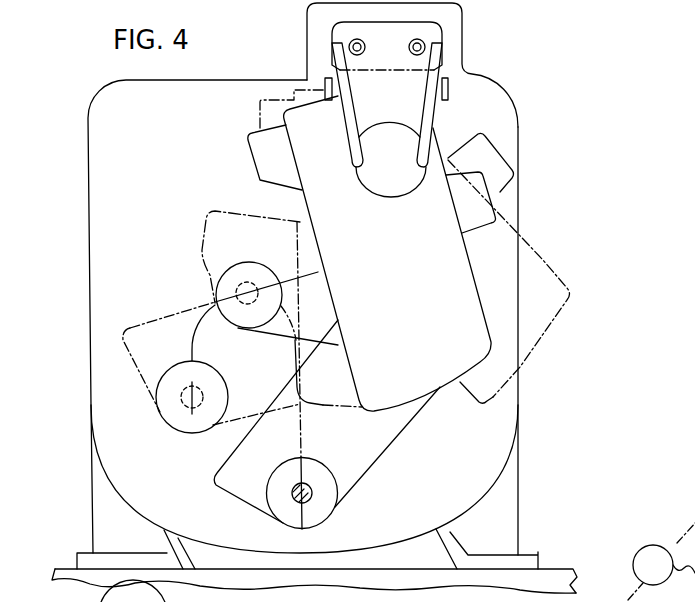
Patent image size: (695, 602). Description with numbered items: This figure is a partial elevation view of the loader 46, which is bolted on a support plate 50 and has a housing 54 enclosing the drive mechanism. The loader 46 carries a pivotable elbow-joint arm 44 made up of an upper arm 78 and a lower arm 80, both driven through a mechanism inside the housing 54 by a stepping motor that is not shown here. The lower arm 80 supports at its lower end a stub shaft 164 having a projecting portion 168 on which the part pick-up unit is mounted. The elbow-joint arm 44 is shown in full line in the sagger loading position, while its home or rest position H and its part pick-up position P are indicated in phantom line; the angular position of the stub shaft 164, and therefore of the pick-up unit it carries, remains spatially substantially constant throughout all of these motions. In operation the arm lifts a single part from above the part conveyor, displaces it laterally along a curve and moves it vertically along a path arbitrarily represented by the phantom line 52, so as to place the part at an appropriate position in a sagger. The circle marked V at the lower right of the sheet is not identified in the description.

The housing 54 is at (93, 153).
The loader 46 is at (260, 78).
The elbow-joint arm 44 is at (312, 252).
The upper arm 78 is at (319, 173).
The home or rest position H is at (203, 240).
The phantom line 52 is at (188, 323).
The part pick-up position P is at (126, 326).
The lower arm 80 is at (217, 500).
The stub shaft 164 is at (290, 484).
The projecting portion 168 is at (309, 500).
The support plate 50 is at (62, 568).
The vehicle V is at (661, 560).